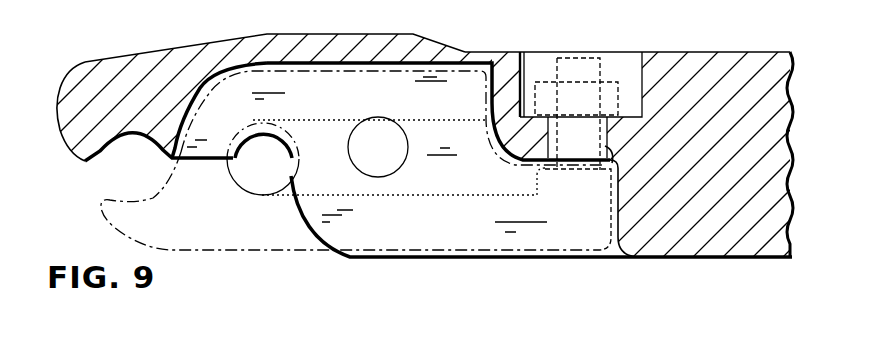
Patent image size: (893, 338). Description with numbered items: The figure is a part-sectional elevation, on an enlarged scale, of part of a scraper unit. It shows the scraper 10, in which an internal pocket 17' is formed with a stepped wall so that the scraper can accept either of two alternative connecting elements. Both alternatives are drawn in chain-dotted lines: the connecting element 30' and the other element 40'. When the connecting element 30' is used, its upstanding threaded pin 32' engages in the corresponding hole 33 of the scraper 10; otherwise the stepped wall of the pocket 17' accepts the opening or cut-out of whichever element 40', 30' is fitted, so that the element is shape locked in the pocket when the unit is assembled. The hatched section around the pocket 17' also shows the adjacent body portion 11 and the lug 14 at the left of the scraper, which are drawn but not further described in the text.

The scraper 10 is at (696, 63).
The cover member 11 is at (193, 70).
The lug 14 is at (132, 142).
The internal pocket 17' is at (438, 90).
The connecting element 30' is at (486, 183).
The threaded pin 32' is at (576, 95).
The hole 33 is at (607, 168).
The element 40' is at (349, 223).